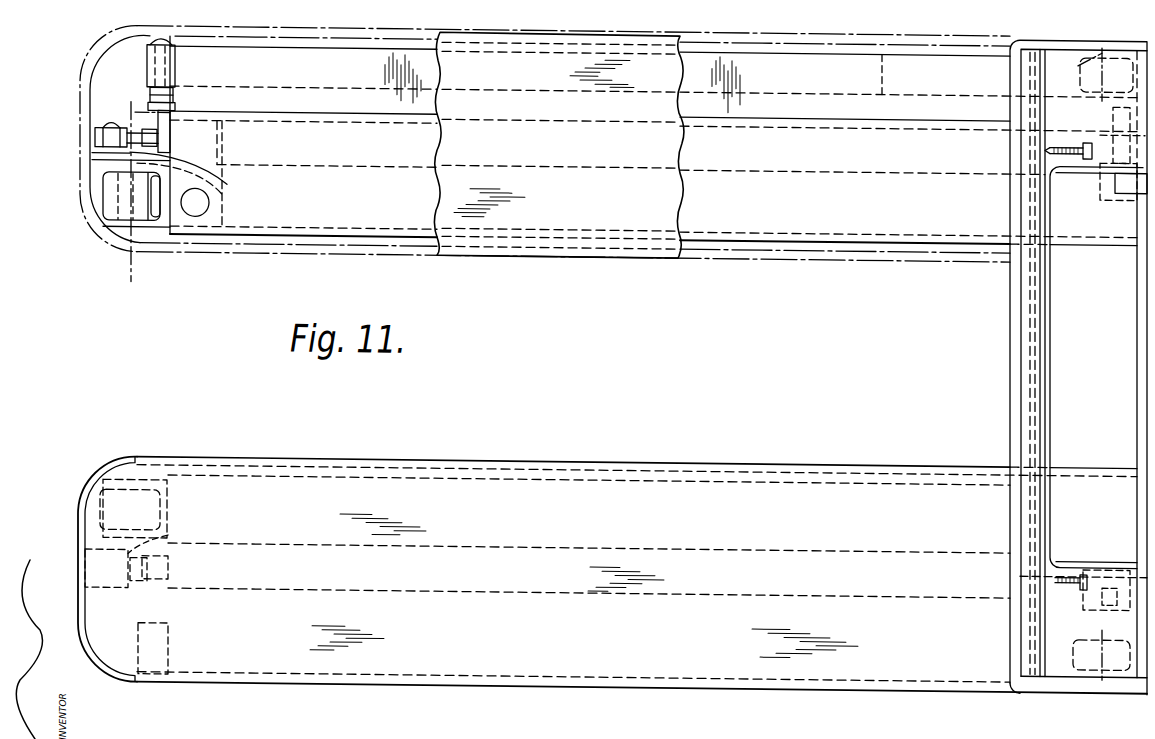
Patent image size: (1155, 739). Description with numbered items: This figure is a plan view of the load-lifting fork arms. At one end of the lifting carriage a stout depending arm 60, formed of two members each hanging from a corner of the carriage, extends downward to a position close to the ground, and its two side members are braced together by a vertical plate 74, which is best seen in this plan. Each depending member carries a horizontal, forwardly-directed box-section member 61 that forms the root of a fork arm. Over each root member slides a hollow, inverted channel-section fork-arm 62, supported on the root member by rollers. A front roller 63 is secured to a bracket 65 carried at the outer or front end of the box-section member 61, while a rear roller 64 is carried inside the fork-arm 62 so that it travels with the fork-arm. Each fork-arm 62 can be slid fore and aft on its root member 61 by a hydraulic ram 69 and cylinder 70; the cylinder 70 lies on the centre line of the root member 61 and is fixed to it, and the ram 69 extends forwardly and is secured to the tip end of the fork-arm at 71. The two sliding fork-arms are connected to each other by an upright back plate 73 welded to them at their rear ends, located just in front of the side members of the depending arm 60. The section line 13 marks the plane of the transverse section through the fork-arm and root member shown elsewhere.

The section line 13- 13 is at (104, 261).
The depending arm 60 is at (1081, 215).
The box-section member 61 is at (350, 212).
The fork-arm 62 is at (507, 249).
The roller 63 is at (142, 210).
The roller 64 is at (1092, 75).
The bracket 65 is at (167, 190).
The hydraulic ram 69 is at (163, 128).
The cylinder 70 is at (372, 146).
The ram securing point 71 is at (205, 166).
The back plate 73 is at (1010, 365).
The vertical plate 74 is at (1042, 305).